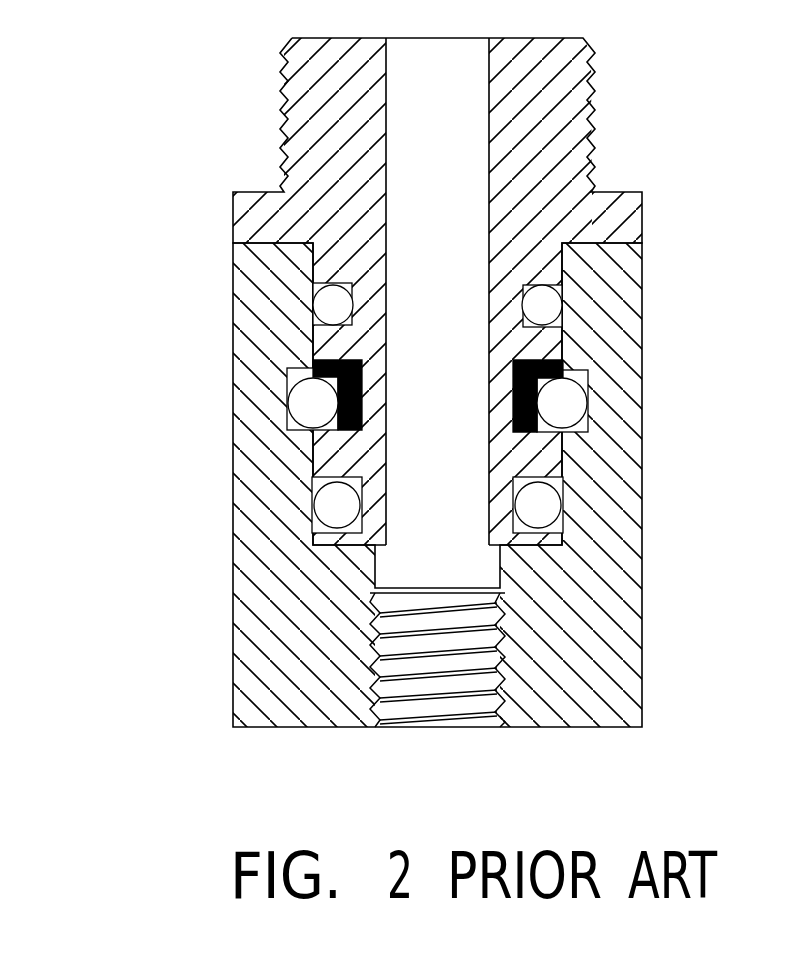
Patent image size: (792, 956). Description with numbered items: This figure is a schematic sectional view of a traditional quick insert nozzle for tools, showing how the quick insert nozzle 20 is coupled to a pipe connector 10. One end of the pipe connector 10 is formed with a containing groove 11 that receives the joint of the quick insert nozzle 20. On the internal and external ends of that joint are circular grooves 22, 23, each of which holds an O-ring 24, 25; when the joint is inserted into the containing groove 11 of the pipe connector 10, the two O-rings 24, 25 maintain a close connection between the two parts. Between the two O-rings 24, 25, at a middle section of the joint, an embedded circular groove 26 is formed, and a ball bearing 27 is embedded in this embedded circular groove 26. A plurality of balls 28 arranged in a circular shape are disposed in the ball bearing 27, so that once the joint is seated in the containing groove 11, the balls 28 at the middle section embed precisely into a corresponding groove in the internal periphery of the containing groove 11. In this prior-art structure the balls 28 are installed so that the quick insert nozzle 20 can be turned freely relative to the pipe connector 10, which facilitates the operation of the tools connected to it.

The pipe connector 10 is at (578, 674).
The containing groove 11 is at (565, 372).
The quick insert nozzle 20 is at (563, 110).
The circular groove 22 is at (352, 477).
The circular groove 23 is at (312, 342).
The O-ring 24 is at (560, 525).
The O-ring 25 is at (547, 302).
The embedded circular groove 26 is at (553, 440).
The ball bearing 27 is at (310, 363).
The balls 28 is at (300, 407).